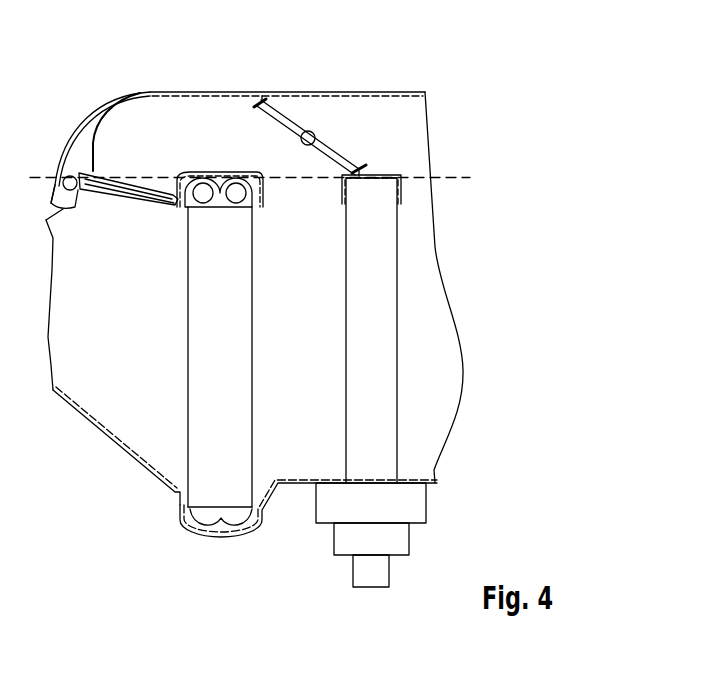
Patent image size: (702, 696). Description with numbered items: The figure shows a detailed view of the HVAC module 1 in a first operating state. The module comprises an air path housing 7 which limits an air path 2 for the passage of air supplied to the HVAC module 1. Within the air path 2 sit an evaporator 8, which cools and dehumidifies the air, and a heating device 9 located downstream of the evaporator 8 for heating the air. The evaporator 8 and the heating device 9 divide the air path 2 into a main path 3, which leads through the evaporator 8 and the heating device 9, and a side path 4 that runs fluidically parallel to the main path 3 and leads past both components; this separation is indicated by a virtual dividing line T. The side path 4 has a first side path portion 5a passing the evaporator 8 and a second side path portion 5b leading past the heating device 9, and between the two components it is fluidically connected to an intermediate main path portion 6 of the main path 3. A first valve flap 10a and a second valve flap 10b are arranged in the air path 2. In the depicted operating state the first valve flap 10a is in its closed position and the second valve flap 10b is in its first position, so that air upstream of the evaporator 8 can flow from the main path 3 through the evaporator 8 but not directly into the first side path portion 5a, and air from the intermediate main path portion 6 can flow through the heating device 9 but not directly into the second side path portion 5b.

The HVAC module 1 is at (522, 150).
The air path 2 is at (445, 331).
The main path 3 is at (161, 331).
The side path 4 is at (417, 141).
The first side path portion 5a is at (255, 145).
The second side path portion 5b is at (417, 141).
The intermediate main path portion 6 is at (330, 331).
The air path housing 7 is at (110, 450).
The evaporator 8 is at (230, 331).
The heating device 9 is at (383, 331).
The first valve flap 10a is at (126, 192).
The second valve flap 10b is at (290, 124).
The virtual dividing line T is at (450, 177).